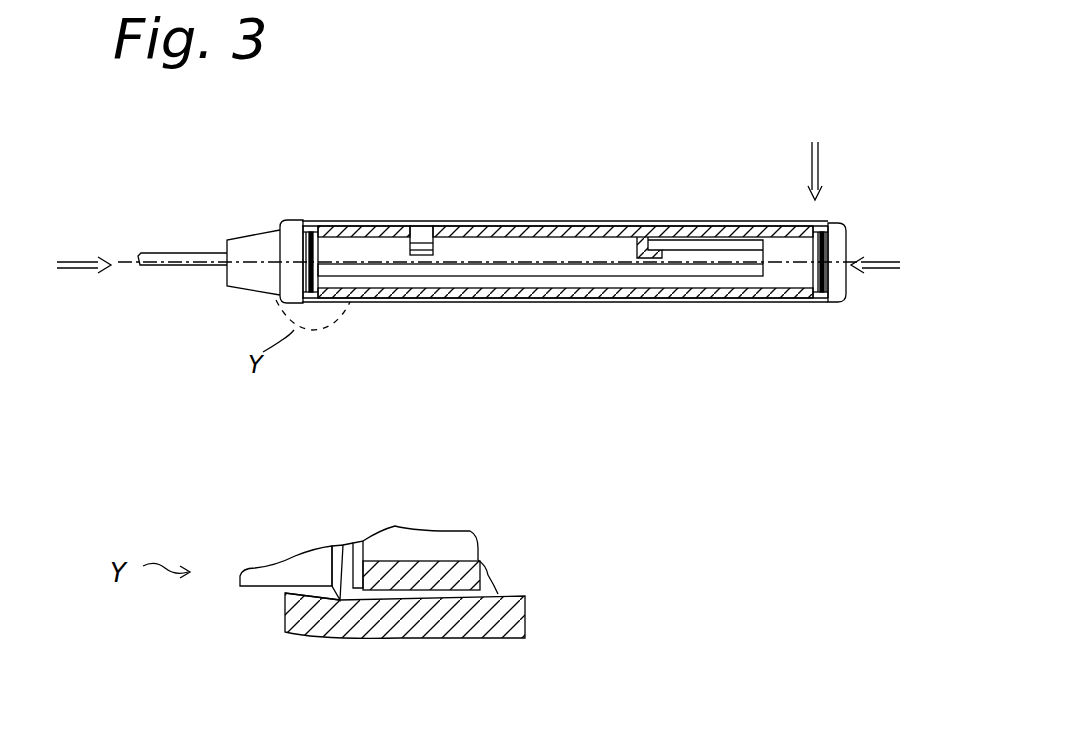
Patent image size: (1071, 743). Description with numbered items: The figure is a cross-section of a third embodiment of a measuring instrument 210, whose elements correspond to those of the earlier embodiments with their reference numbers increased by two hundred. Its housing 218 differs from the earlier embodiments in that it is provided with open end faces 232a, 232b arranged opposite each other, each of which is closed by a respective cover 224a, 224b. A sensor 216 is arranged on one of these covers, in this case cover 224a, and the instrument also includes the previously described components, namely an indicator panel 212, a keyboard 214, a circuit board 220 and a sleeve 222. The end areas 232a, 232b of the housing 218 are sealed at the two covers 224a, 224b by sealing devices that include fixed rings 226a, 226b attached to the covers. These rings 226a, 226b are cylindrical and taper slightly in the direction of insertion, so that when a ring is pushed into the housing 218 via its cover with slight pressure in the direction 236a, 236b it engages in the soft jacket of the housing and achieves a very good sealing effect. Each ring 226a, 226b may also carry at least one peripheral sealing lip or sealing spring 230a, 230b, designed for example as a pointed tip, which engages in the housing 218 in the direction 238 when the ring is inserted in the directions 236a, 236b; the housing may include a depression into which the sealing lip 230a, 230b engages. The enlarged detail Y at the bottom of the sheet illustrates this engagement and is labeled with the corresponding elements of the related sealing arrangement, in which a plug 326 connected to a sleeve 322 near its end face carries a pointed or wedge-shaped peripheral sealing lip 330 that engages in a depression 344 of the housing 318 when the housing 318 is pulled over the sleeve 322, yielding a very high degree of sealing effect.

The measuring instrument 210 is at (485, 70).
The indicator panel 212 is at (700, 250).
The keyboard 214 is at (418, 232).
The sensor 216 is at (146, 266).
The housing 218 is at (540, 222).
The circuit board 220 is at (548, 268).
The sleeve 222 is at (348, 228).
The cover 224a is at (250, 288).
The cover 224b is at (818, 303).
The fixed ring 226a is at (283, 220).
The fixed ring 226b is at (833, 222).
The sealing lip 230a is at (346, 300).
The sealing lip 230b is at (830, 270).
The end face 232a is at (316, 330).
The end face 232b is at (828, 340).
The direction 236a is at (75, 254).
The direction 236b is at (890, 257).
The direction 238 is at (826, 162).
The plug 326 is at (250, 586).
The sealing lip 330 is at (343, 545).
The sleeve 322 is at (480, 576).
The depression 344 is at (323, 594).
The housing 318 is at (458, 630).